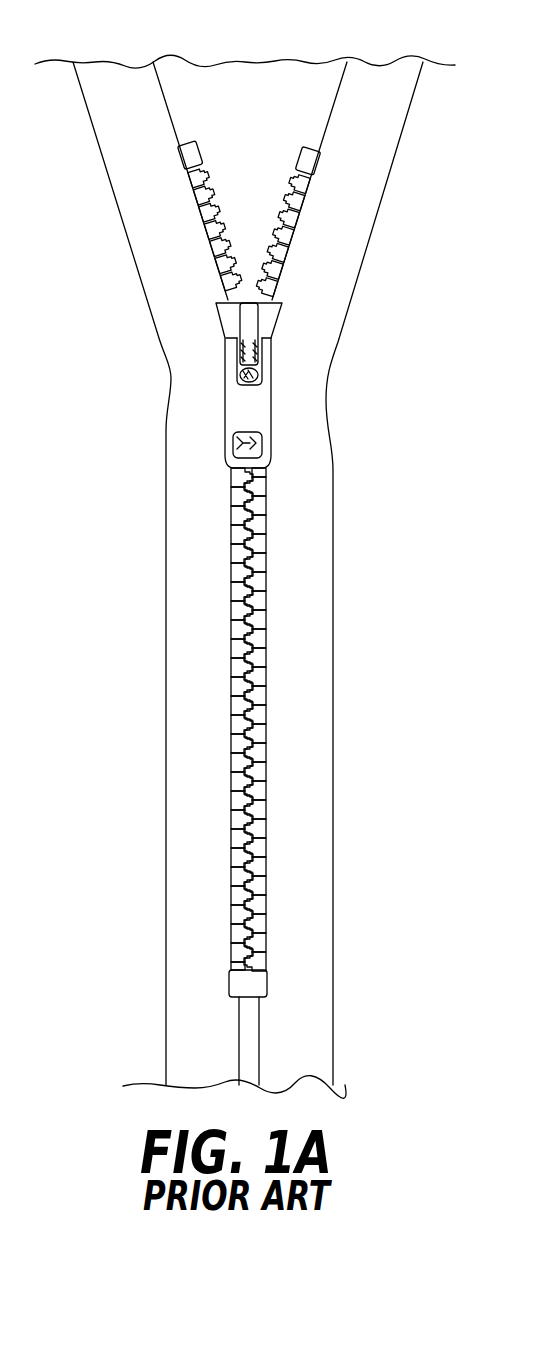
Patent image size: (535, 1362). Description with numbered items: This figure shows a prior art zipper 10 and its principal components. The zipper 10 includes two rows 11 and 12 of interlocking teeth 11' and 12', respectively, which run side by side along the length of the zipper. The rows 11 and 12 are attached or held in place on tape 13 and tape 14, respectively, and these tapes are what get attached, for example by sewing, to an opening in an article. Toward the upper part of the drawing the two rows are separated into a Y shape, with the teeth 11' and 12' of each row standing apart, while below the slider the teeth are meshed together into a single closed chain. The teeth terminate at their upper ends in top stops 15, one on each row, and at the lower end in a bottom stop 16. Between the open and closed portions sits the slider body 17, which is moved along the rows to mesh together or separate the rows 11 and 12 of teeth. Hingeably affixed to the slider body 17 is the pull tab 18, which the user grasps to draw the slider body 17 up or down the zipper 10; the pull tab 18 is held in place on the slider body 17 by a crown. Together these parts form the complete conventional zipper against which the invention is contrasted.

The zipper 10 is at (511, 30).
The row of interlocking teeth 11 is at (186, 719).
The row of interlocking teeth 12 is at (314, 719).
The interlocking teeth 11' is at (223, 194).
The interlocking teeth 12' is at (282, 181).
The tape 13 is at (197, 580).
The tape 14 is at (292, 490).
The top stops 15 is at (187, 146).
The bottom stops 16 is at (255, 985).
The slider body 17 is at (247, 291).
The pull tab 18 is at (257, 418).